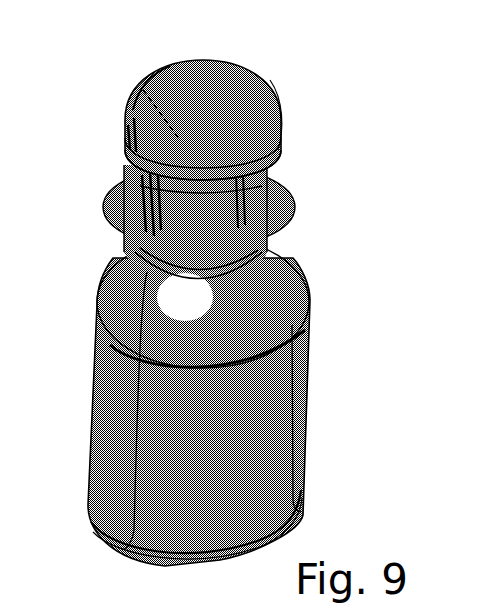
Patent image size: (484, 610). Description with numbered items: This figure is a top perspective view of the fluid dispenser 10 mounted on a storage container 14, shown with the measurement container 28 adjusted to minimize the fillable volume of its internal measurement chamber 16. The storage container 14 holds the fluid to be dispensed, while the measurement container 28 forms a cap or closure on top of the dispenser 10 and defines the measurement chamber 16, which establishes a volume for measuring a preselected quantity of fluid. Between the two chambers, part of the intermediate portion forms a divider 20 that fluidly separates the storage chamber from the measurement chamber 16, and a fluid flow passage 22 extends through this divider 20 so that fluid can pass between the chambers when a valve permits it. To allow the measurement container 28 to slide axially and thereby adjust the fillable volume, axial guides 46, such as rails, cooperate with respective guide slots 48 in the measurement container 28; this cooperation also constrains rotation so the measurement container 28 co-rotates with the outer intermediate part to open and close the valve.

The fluid dispenser 10 is at (216, 285).
The storage container 14 is at (312, 288).
The internal measurement chamber 16 is at (232, 92).
The divider 20 is at (250, 115).
The fluid flow passage 22 is at (143, 90).
The measurement container 28 is at (277, 130).
The axial guide 46 is at (258, 213).
The guide slot 48 is at (283, 250).